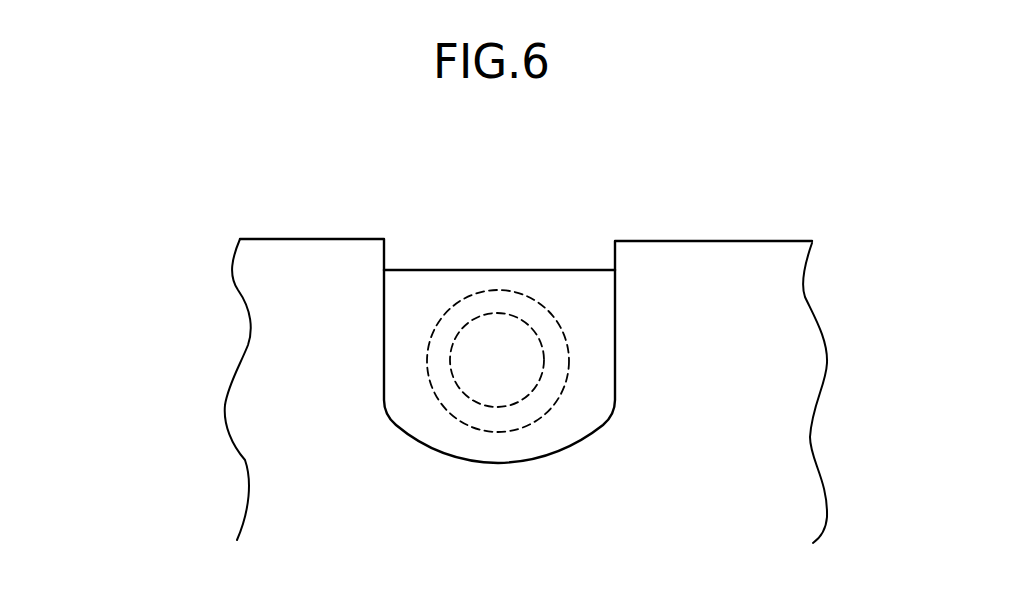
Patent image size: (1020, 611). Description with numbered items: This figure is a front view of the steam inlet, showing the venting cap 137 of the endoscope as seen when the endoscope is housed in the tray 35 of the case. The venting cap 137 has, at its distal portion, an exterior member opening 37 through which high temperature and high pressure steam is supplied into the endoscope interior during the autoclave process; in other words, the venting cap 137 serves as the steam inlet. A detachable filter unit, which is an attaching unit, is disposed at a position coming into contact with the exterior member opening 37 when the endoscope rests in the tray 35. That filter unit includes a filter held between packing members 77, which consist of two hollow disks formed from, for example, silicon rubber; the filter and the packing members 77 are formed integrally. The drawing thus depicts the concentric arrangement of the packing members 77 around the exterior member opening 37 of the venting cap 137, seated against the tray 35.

The tray 35 is at (273, 440).
The exterior member opening 37 is at (490, 355).
The packing members 77 is at (445, 283).
The venting cap 137 is at (556, 360).